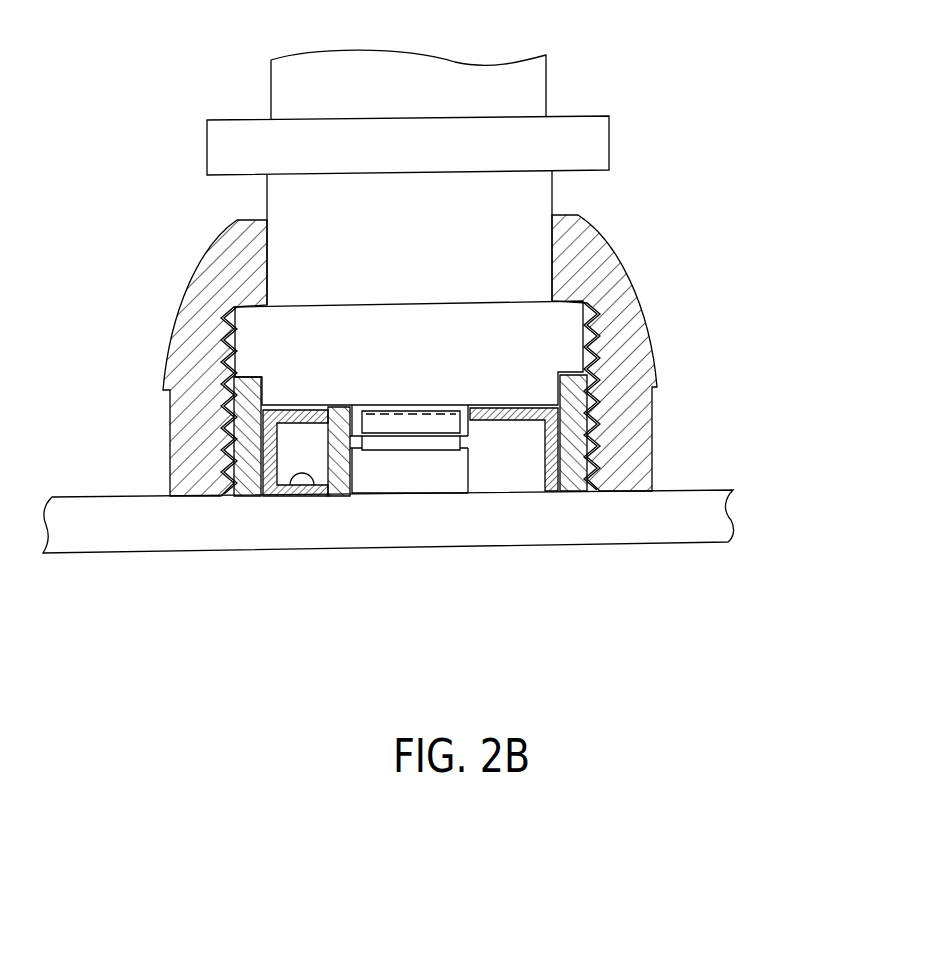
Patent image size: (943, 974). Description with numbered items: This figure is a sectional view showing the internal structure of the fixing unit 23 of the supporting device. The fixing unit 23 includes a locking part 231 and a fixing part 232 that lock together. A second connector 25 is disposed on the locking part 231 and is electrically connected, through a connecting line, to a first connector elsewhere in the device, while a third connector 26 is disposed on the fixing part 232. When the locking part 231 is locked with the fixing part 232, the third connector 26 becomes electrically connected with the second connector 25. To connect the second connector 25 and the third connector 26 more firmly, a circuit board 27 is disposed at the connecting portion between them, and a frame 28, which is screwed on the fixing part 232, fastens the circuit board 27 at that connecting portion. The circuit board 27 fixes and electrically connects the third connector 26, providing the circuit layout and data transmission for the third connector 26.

The fixing unit 23 is at (431, 384).
The locking part 231 is at (652, 357).
The fixing part 232 is at (401, 494).
The second connector 25 is at (463, 427).
The third connector 26 is at (410, 478).
The circuit board 27 is at (352, 482).
The frame 28 is at (301, 497).